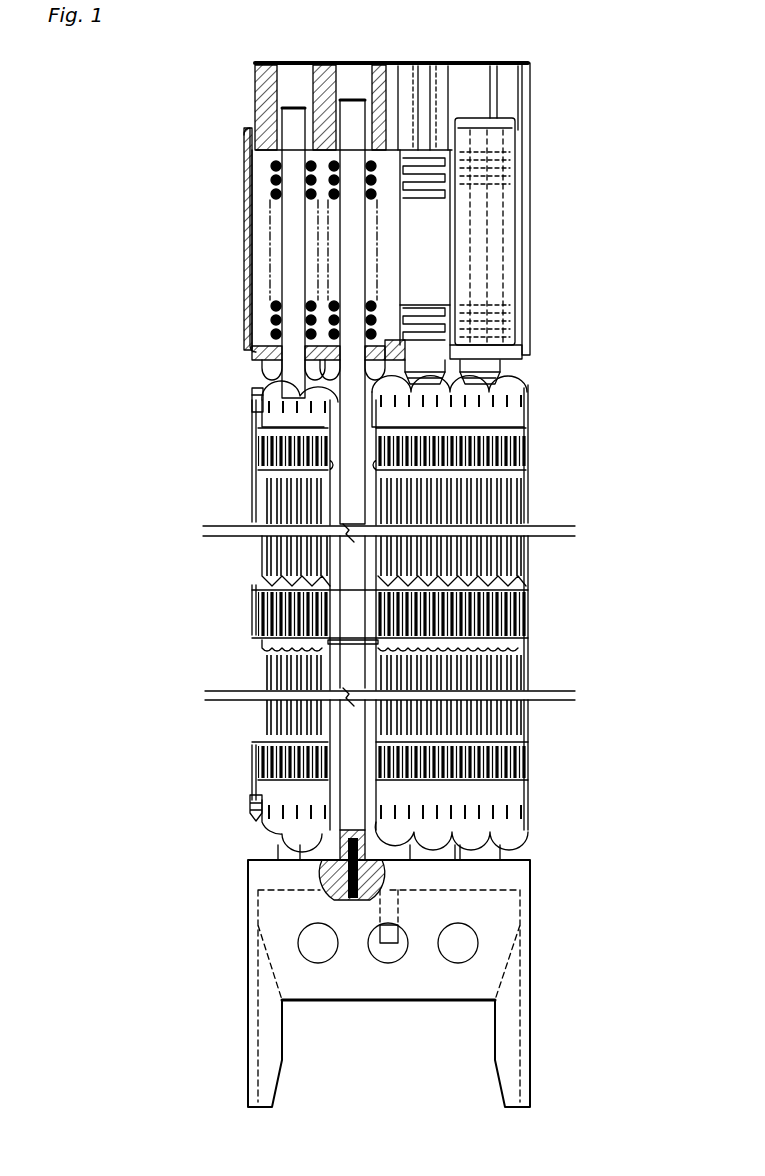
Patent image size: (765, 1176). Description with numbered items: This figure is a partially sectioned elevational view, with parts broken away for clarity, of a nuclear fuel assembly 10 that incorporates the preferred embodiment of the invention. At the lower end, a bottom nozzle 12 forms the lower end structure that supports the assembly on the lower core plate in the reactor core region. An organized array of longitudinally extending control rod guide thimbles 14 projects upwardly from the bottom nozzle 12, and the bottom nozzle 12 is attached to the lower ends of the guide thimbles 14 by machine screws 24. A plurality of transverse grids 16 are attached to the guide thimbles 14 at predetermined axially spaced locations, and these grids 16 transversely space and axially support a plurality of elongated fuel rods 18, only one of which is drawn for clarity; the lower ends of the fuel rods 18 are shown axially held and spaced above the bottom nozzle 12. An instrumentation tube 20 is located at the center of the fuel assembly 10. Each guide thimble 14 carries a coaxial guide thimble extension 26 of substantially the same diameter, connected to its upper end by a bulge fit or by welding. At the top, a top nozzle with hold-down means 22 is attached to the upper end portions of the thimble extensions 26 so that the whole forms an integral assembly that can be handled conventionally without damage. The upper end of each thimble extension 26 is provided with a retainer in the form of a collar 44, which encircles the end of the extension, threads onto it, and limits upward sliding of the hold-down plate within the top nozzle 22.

The fuel assembly 10 is at (626, 384).
The bottom nozzle 12 is at (528, 897).
The control rod guide thimbles 14 is at (356, 428).
The transverse grids 16 is at (530, 428).
The fuel rods 18 is at (252, 805).
The instrumentation tube 20 is at (504, 380).
The top nozzle with holddown means 22 is at (550, 213).
The machine screws 24 is at (322, 870).
The guide thimble extension 26 is at (292, 366).
The collar 44 is at (256, 116).